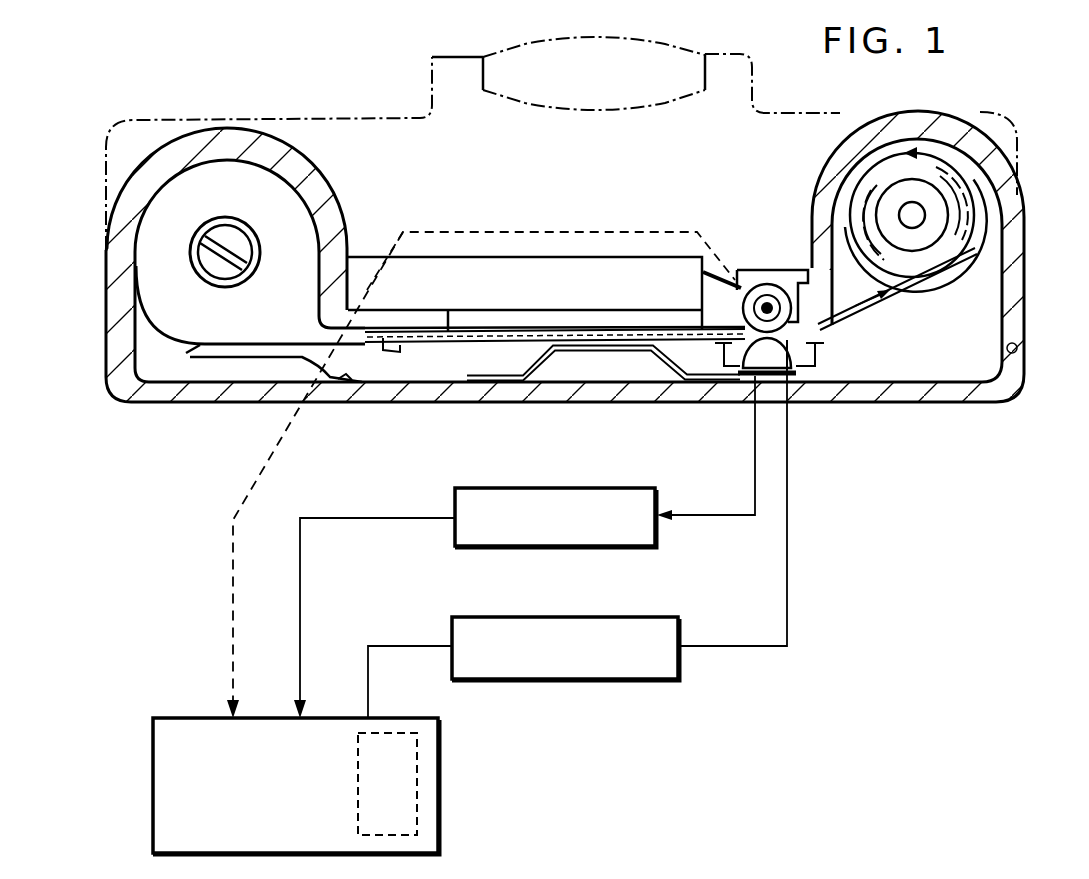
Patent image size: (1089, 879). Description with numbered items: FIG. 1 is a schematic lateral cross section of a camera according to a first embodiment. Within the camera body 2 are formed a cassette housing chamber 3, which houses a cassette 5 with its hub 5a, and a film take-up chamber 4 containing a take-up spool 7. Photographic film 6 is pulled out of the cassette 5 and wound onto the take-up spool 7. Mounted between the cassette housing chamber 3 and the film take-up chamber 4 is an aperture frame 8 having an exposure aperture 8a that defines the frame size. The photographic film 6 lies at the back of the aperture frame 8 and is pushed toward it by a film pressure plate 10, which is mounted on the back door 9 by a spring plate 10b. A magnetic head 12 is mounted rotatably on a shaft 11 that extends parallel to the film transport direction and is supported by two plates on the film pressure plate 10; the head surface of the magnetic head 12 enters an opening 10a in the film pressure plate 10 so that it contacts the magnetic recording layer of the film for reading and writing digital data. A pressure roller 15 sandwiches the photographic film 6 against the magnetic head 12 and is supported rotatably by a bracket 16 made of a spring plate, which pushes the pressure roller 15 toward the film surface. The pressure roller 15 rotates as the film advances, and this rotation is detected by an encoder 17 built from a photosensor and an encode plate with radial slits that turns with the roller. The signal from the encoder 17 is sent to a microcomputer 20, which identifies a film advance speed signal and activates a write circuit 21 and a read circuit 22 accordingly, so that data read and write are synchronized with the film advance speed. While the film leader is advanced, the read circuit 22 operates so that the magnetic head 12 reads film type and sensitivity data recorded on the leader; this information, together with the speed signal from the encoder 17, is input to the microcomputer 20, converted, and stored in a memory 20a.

The camera body 2 is at (332, 157).
The cassette housing chamber 3 is at (147, 333).
The film take-up chamber 4 is at (977, 293).
The cassette 5 is at (197, 187).
The supply reel hub 5a is at (190, 240).
The photographic film 6 is at (483, 332).
The take-up spool 7 is at (886, 198).
The aperture frame 8 is at (431, 323).
The exposure aperture 8a is at (553, 320).
The back door 9 is at (922, 406).
The film pressure plate 10 is at (420, 350).
The opening 10a is at (845, 330).
The spring plate 10b is at (663, 386).
The shaft 11 is at (715, 386).
The magnetic head 12 is at (782, 380).
The pressure roller 15 is at (763, 288).
The bracket 16 is at (700, 292).
The encoder 17 is at (788, 295).
The microcomputer 20 is at (153, 790).
The memory 20a is at (410, 792).
The write circuit 21 is at (566, 683).
The read circuit 22 is at (540, 487).